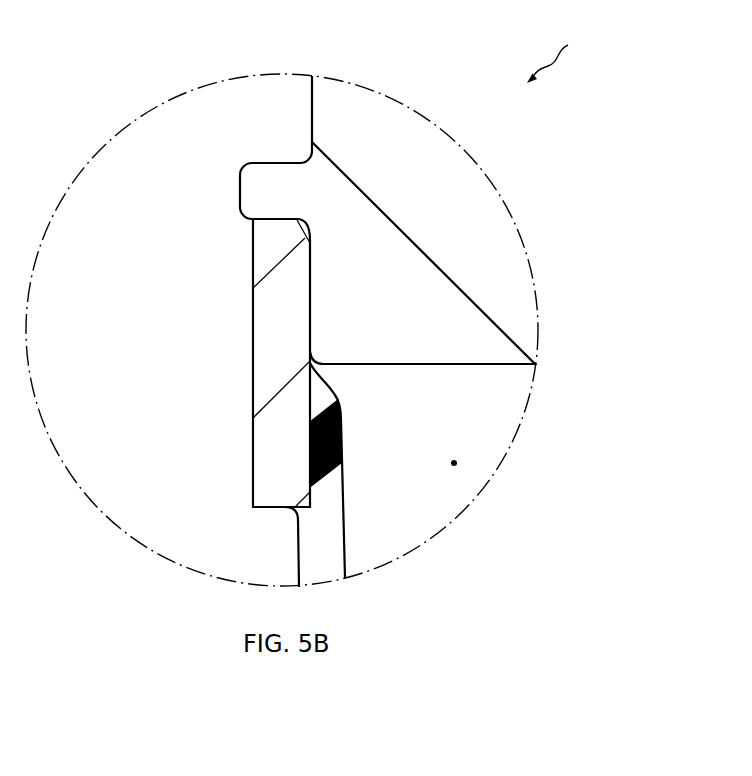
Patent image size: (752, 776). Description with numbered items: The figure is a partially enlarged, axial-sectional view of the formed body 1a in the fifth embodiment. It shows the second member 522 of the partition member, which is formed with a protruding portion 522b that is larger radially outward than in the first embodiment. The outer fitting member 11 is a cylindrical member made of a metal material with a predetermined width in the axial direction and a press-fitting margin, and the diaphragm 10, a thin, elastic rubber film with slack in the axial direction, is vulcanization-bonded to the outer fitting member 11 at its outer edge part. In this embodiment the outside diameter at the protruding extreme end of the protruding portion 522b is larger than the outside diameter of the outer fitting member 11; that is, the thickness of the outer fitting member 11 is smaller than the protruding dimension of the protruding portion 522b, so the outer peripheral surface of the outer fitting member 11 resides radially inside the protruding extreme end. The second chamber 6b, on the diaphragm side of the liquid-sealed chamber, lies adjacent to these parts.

The formed body 1a is at (561, 53).
The second member 522 is at (458, 165).
The protruding portion 522b is at (257, 190).
The outer fitting member 11 is at (273, 352).
The diaphragm 10 is at (327, 537).
The second chamber 6b is at (454, 463).